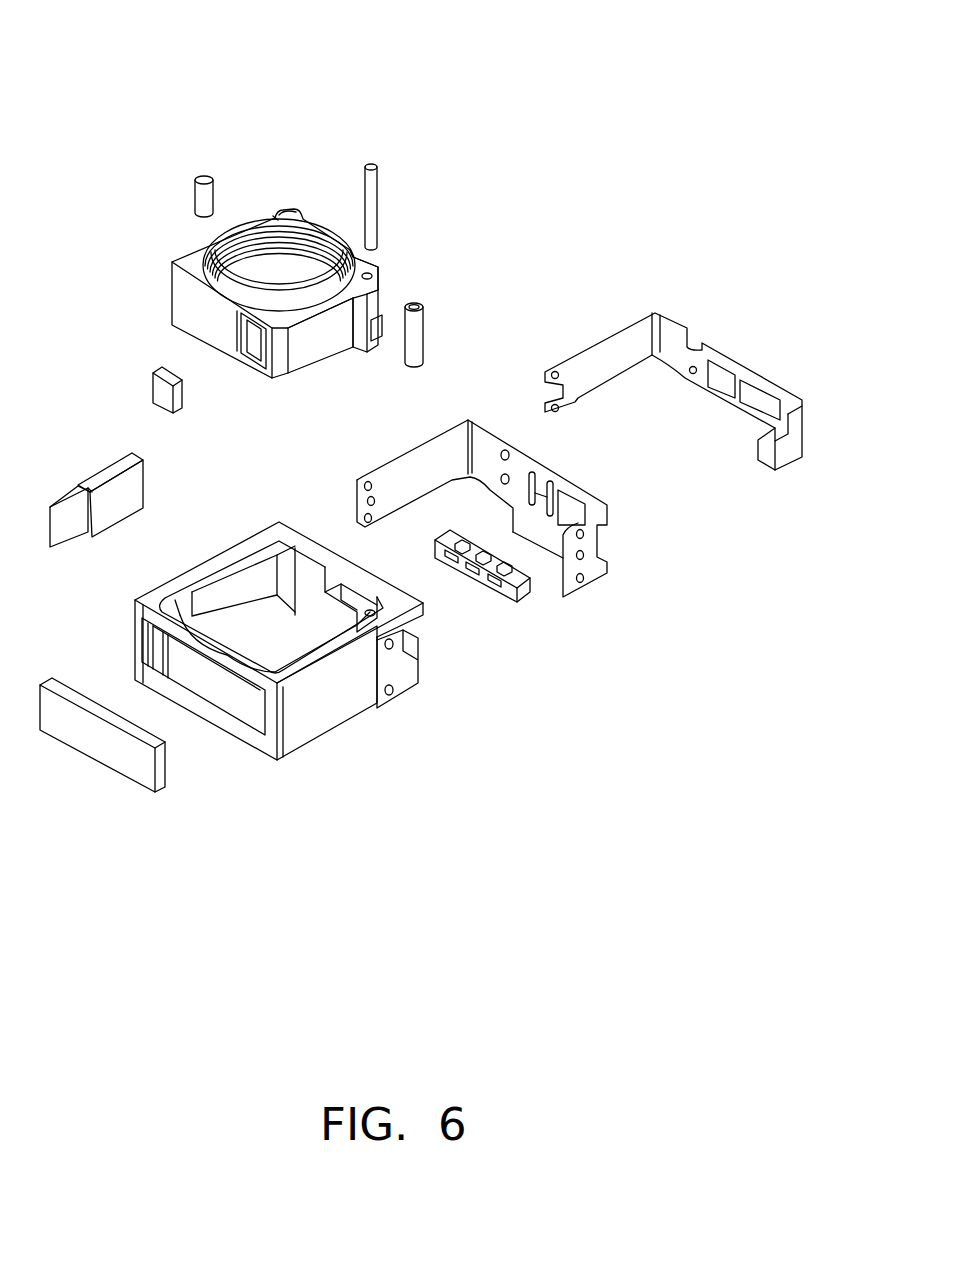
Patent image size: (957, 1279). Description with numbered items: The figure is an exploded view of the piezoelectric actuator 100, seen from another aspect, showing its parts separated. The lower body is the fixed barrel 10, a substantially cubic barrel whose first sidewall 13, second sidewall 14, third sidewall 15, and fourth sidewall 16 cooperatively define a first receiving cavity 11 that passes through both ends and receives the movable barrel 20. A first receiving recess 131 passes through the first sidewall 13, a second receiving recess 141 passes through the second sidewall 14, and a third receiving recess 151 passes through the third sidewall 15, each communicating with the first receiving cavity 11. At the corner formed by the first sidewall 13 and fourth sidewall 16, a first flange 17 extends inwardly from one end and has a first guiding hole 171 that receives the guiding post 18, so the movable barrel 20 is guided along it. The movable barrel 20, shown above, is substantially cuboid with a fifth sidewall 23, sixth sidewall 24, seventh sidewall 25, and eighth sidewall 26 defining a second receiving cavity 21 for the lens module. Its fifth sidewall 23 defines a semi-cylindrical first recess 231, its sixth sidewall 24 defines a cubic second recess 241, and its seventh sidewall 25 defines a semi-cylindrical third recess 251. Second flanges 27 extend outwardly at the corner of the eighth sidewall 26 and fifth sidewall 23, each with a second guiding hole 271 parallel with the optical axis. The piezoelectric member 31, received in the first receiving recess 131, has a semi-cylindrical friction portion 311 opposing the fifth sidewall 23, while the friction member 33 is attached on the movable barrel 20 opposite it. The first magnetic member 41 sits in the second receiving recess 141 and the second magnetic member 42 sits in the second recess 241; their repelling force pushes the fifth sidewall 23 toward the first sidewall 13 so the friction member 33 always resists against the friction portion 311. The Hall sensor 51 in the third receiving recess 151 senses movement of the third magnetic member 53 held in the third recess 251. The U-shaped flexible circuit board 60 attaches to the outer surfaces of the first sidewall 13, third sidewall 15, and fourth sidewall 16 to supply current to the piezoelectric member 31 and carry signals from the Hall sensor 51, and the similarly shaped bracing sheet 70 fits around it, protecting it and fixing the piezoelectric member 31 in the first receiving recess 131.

The piezoelectric actuator 100 is at (138, 104).
The fixed barrel 10 is at (110, 614).
The first receiving cavity 11 is at (292, 655).
The first sidewall 13 is at (340, 562).
The first receiving recess 131 is at (352, 600).
The second sidewall 14 is at (238, 730).
The second receiving recess 141 is at (217, 675).
The third sidewall 15 is at (208, 563).
The third receiving recess 151 is at (243, 585).
The fourth sidewall 16 is at (303, 722).
The first flange 17 is at (417, 645).
The first guiding hole 171 is at (378, 613).
The guiding post 18 is at (373, 168).
The movable barrel 20 is at (137, 273).
The second receiving cavity 21 is at (290, 293).
The fifth sidewall 23 is at (297, 214).
The first recess 231 is at (375, 257).
The sixth sidewall 24 is at (183, 303).
The second recess 241 is at (257, 342).
The seventh sidewall 25 is at (217, 240).
The third recess 251 is at (273, 218).
The eighth sidewall 26 is at (305, 352).
The second flange 27 is at (381, 269).
The second guiding hole 271 is at (383, 282).
The piezoelectric member 31 is at (525, 598).
The friction portion 311 is at (480, 570).
The friction member 33 is at (415, 347).
The first magnetic member 41 is at (113, 748).
The second magnetic member 42 is at (167, 392).
The Hall sensor 51 is at (105, 473).
The third magnetic member 53 is at (205, 202).
The flexible circuit board 60 is at (585, 580).
The bracing sheet 70 is at (772, 445).